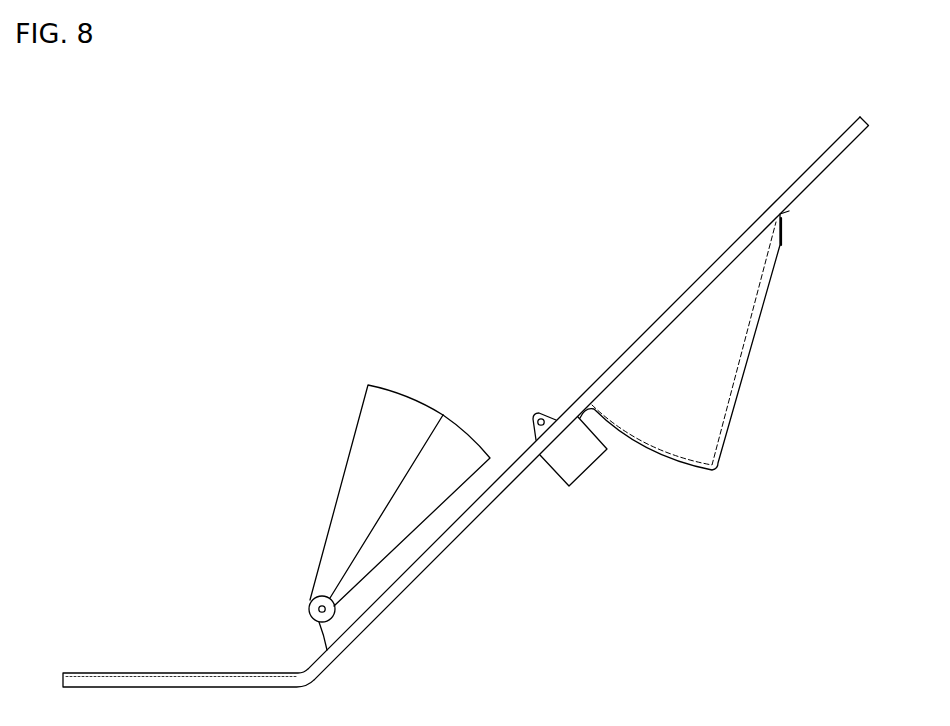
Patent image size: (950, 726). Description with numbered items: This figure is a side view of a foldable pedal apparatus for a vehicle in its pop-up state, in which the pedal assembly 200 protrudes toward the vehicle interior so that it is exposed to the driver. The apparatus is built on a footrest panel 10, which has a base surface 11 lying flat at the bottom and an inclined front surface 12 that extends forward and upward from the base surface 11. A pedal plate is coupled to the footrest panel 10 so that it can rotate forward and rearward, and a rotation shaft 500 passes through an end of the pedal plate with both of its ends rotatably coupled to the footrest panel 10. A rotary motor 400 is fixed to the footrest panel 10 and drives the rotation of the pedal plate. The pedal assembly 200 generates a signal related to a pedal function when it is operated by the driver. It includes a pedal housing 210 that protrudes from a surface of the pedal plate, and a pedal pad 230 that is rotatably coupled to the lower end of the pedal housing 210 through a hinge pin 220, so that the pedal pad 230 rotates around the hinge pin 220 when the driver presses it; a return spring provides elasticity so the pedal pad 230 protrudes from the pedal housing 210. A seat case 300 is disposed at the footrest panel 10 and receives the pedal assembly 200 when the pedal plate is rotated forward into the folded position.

The footrest panel 10 is at (748, 220).
The base surface 11 is at (108, 676).
The inclined front surface 12 is at (817, 165).
The pedal assembly 200 is at (346, 508).
The pedal housing 210 is at (383, 540).
The hinge pin 220 is at (318, 609).
The pedal pad 230 is at (367, 457).
The seat case 300 is at (708, 372).
The rotary motor 400 is at (583, 457).
The rotation shaft 500 is at (542, 415).